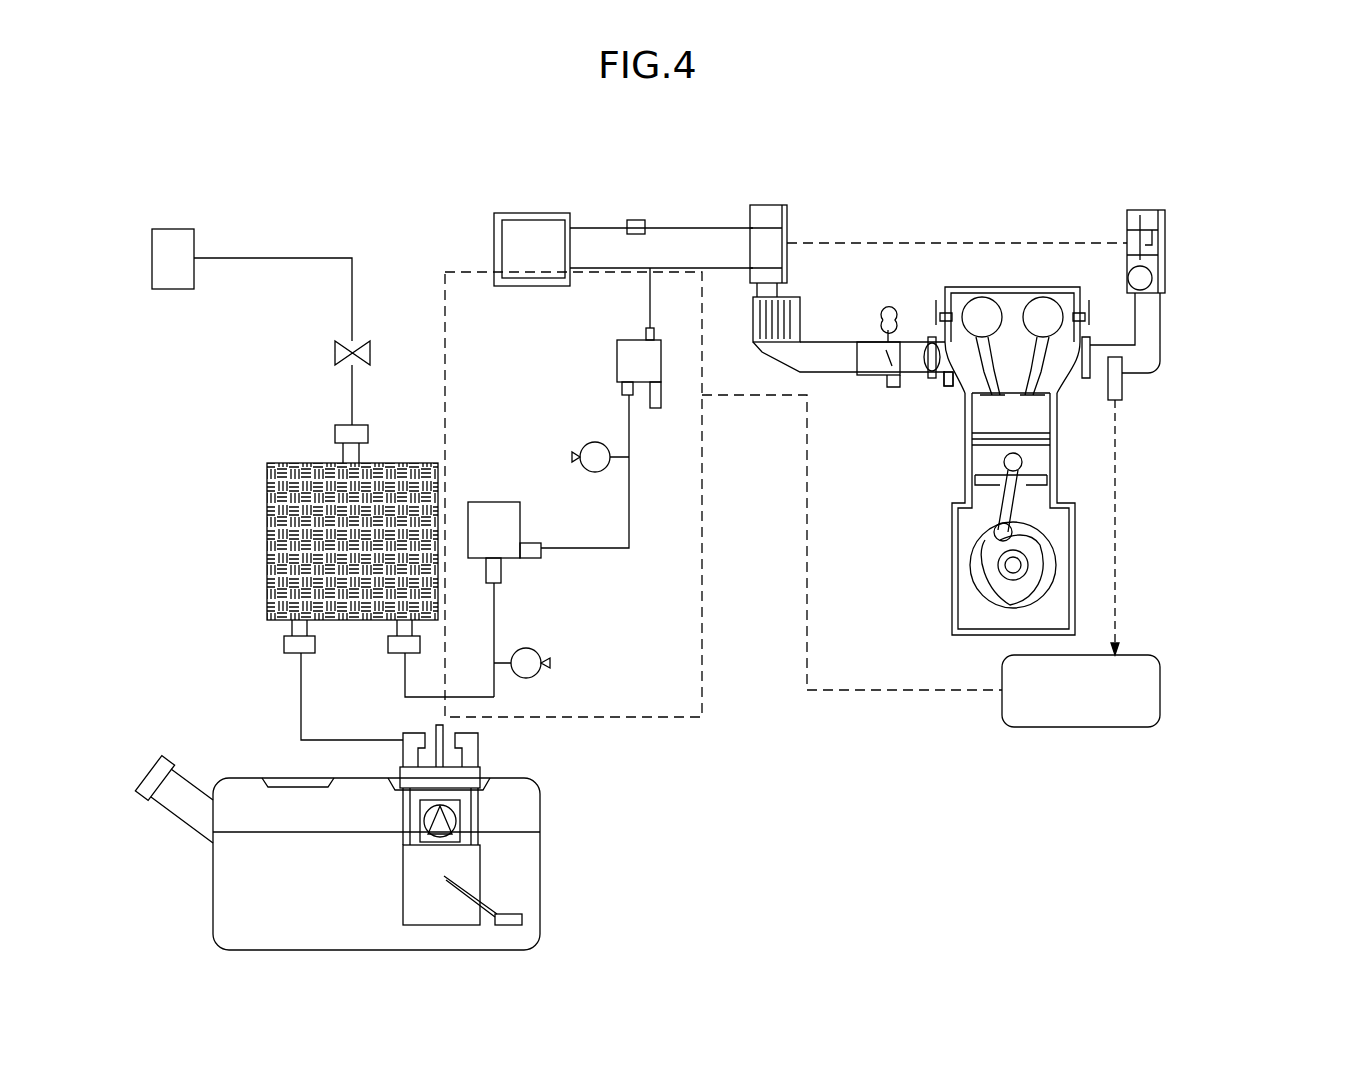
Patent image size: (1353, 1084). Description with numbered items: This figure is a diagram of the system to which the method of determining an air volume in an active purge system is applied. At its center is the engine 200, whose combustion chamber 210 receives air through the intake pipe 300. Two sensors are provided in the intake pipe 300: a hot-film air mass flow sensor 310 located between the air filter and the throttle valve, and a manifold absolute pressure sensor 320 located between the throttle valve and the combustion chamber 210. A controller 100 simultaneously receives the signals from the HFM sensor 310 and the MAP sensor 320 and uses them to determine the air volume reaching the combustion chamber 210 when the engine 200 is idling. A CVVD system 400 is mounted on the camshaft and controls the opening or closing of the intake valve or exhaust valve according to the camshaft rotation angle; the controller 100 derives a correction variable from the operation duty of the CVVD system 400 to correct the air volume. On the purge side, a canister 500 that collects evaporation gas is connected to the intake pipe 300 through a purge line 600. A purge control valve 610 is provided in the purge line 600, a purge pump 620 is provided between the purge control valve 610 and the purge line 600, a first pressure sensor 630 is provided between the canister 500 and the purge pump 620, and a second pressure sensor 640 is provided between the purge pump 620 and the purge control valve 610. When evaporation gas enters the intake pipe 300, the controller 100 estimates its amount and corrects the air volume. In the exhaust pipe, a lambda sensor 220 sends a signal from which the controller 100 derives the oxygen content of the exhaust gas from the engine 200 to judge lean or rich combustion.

The controller 100 is at (1145, 693).
The engine 200 is at (1077, 408).
The combustion chamber 210 is at (1060, 430).
The lambda sensor 220 is at (1122, 392).
The intake pipe 300 is at (704, 240).
The hot-film air mass flow (HFM) sensor 310 is at (637, 220).
The manifold absolute pressure (MAP) sensor 320 is at (948, 390).
The continuously variable valve duration (CVVD) system 400 is at (973, 287).
The canister 500 is at (262, 536).
The purge line 600 is at (614, 550).
The purge control valve 610 is at (628, 362).
The purge pump 620 is at (494, 512).
The first pressure sensor 630 is at (541, 655).
The second pressure sensor 640 is at (588, 442).